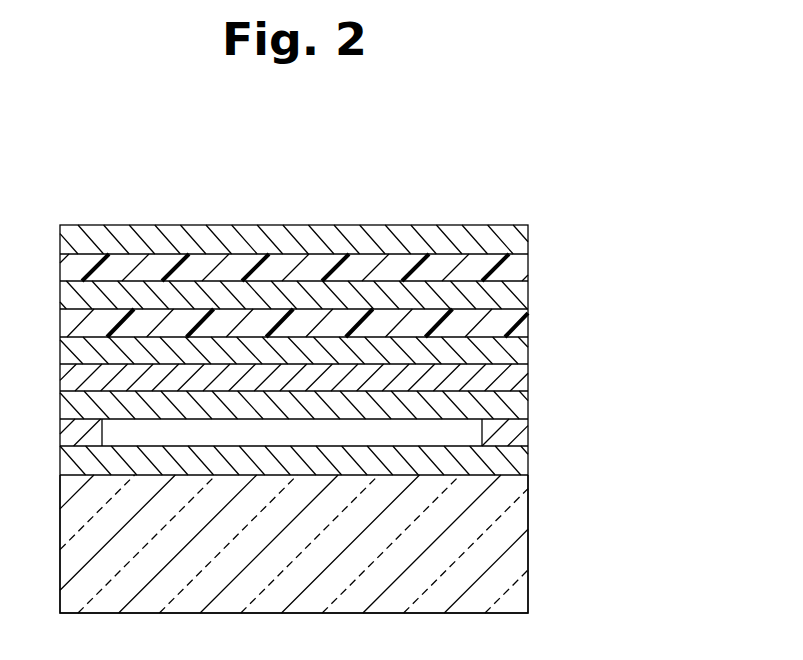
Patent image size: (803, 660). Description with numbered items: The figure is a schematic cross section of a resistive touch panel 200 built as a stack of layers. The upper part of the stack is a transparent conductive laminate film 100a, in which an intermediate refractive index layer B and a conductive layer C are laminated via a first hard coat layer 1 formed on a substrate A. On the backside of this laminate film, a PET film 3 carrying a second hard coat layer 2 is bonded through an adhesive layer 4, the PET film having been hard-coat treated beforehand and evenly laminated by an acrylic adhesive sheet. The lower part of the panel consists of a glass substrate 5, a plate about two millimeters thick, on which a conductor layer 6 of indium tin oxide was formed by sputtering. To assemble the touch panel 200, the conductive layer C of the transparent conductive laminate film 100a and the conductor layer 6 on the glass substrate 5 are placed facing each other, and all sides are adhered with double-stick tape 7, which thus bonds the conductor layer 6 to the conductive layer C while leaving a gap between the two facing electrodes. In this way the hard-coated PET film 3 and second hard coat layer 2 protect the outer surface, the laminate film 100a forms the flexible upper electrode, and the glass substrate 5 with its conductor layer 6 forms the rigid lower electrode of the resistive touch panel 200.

The resistive touch panel 200 is at (437, 188).
The second hard coat layer 2 is at (528, 241).
The PET film 3 is at (528, 270).
The adhesive layer 4 is at (528, 298).
The substrate A is at (528, 325).
The first hard coat layer 1 is at (528, 353).
The intermediate refractive index layer B is at (528, 381).
The conductive layer C is at (317, 409).
The transparent conductive laminate film 100a is at (362, 368).
The double-stick tape 7 is at (528, 435).
The conductor layer 6 is at (528, 462).
The glass substrate 5 is at (522, 546).